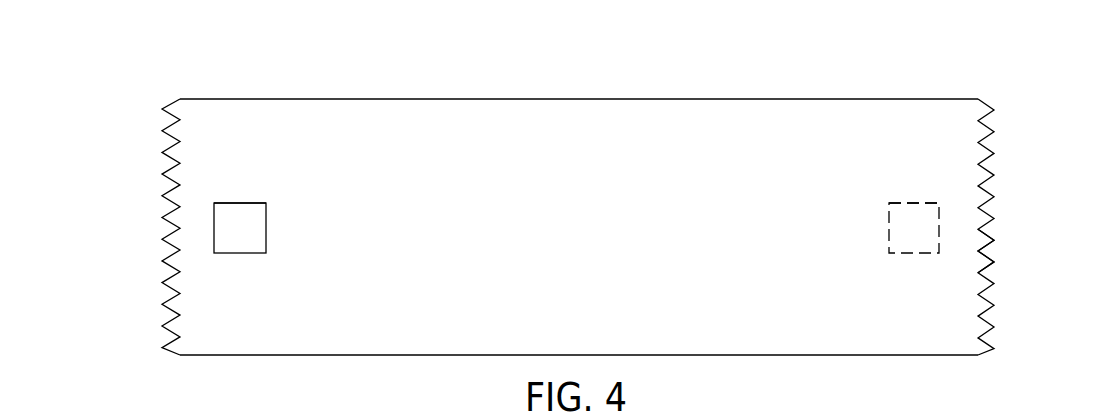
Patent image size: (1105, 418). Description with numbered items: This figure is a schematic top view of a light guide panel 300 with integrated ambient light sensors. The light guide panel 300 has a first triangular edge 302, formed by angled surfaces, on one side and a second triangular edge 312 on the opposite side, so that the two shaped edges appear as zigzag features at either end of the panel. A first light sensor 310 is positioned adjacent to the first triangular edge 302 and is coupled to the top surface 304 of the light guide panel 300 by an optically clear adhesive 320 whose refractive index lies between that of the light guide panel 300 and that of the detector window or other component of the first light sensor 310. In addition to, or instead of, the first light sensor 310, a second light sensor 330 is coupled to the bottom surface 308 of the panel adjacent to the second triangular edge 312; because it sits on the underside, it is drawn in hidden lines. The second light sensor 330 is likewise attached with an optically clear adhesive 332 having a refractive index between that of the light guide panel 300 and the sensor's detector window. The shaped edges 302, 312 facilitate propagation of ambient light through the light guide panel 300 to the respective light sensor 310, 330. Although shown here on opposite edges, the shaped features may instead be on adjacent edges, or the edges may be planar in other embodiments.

The light guide panel 300 is at (1030, 76).
The first triangular edge 302 is at (166, 216).
The top surface 304 is at (422, 113).
The bottom surface 308 is at (996, 171).
The first light sensor 310 is at (258, 237).
The second triangular edge 312 is at (994, 260).
The optically clear adhesive 320 is at (241, 201).
The second light sensor 330 is at (897, 236).
The optically clear adhesive 332 is at (910, 201).